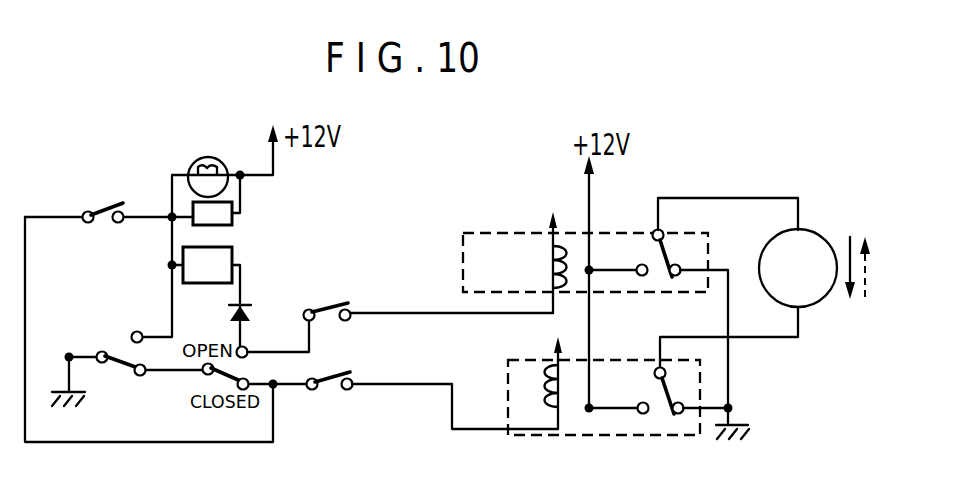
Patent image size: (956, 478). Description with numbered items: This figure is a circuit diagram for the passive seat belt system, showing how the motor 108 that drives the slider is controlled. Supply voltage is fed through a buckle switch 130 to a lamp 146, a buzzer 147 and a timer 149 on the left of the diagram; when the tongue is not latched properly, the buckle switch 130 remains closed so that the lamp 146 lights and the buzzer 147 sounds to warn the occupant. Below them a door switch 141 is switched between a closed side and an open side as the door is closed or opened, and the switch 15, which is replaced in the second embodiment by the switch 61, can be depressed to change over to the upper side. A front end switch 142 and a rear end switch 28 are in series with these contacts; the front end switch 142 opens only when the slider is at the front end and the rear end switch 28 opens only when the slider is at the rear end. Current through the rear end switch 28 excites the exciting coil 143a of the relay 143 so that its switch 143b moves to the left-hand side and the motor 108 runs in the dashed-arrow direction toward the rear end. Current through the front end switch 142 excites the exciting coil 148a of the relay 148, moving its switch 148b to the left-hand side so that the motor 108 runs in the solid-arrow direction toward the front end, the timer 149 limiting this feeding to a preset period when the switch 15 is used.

The buckle switch 130 is at (110, 210).
The lamp 146 is at (194, 162).
The buzzer 147 is at (232, 218).
The timer 149 is at (232, 254).
The switch 15 is at (118, 356).
The switch 61 is at (89, 356).
The door switch 141 is at (232, 379).
The front end switch 142 is at (328, 306).
The rear end switch 28 is at (333, 373).
The relay 148 is at (617, 279).
The exciting coil 148a is at (547, 263).
The switch 148b is at (667, 250).
The relay 143 is at (653, 371).
The exciting coil 143a is at (562, 385).
The switch 143b is at (664, 390).
The motor 108 is at (813, 245).